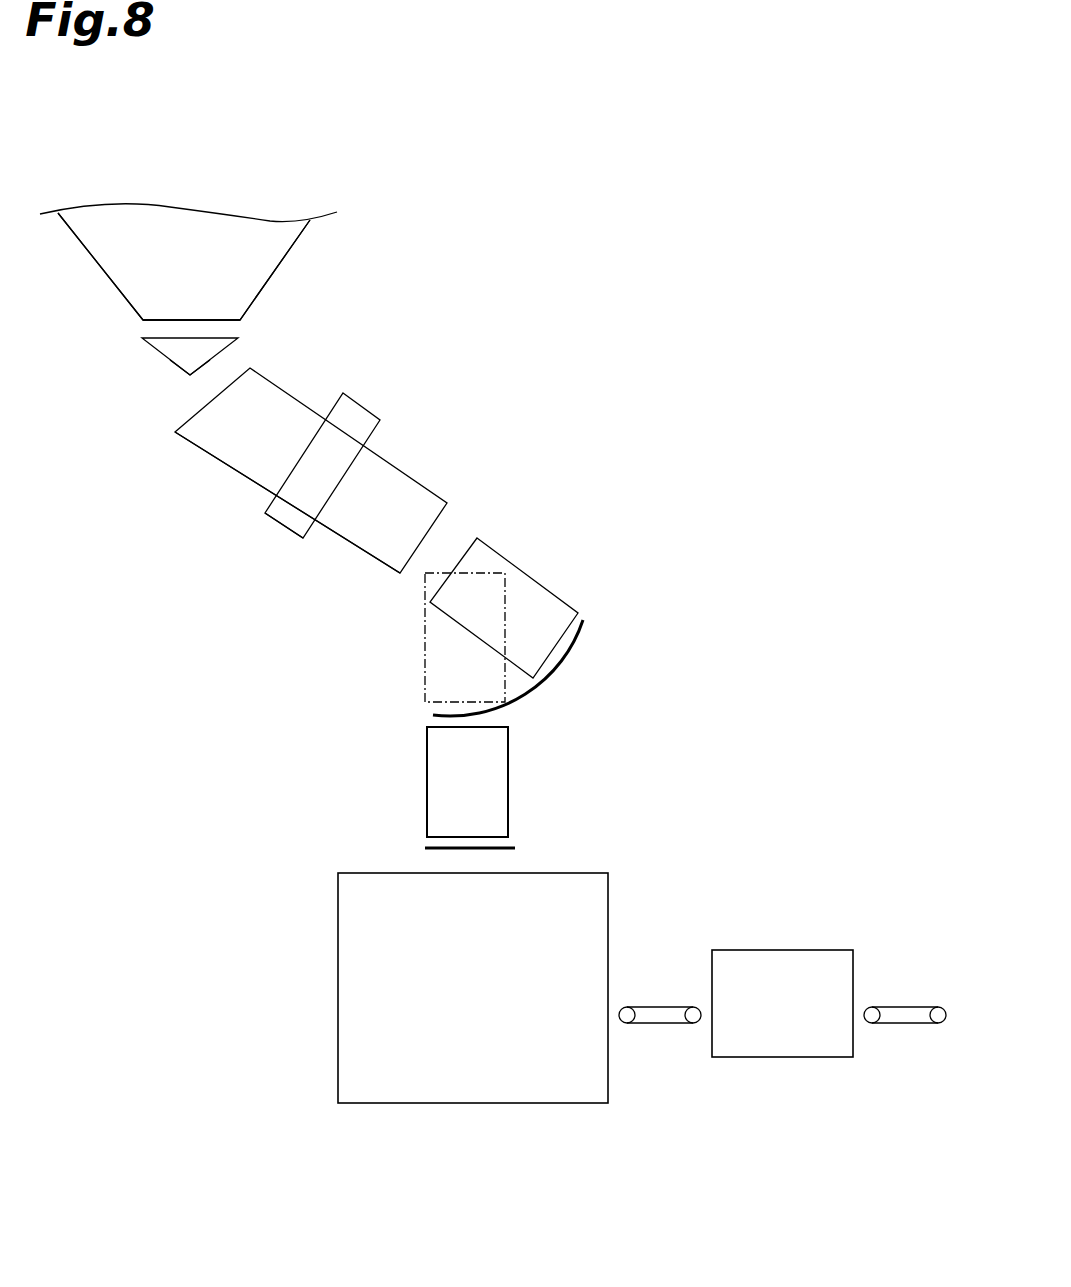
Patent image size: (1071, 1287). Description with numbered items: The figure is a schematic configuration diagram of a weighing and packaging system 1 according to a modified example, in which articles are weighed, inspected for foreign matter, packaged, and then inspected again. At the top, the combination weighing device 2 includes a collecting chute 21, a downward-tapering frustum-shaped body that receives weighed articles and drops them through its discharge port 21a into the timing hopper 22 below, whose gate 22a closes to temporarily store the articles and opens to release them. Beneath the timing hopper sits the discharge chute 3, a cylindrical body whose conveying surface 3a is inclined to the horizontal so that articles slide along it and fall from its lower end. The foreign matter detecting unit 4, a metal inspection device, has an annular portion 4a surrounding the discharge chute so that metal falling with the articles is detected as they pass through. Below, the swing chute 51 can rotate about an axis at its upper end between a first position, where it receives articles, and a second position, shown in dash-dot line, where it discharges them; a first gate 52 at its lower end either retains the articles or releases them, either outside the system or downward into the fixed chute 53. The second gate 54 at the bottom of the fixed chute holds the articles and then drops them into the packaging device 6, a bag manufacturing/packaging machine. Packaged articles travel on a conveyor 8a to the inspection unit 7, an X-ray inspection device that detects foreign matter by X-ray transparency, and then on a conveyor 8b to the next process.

The weighing and packaging system 1 is at (513, 215).
The combination weighing device 2 is at (116, 292).
The collecting chute 21 is at (282, 268).
The discharge port 21a is at (228, 323).
The timing hopper 22 is at (160, 357).
The gate 22a is at (183, 372).
The discharge chute 3 is at (403, 465).
The conveying surface 3a is at (228, 457).
The foreign matter detecting unit 4 is at (348, 395).
The annular portion 4a is at (283, 532).
The swing chute 51 is at (528, 567).
The first gate 52 is at (573, 648).
The fixed chute 53 is at (510, 772).
The second gate 54 is at (507, 847).
The packaging device 6 is at (610, 903).
The inspection unit 7 is at (772, 948).
The conveyor 8a is at (653, 1005).
The conveyor 8b is at (900, 1005).